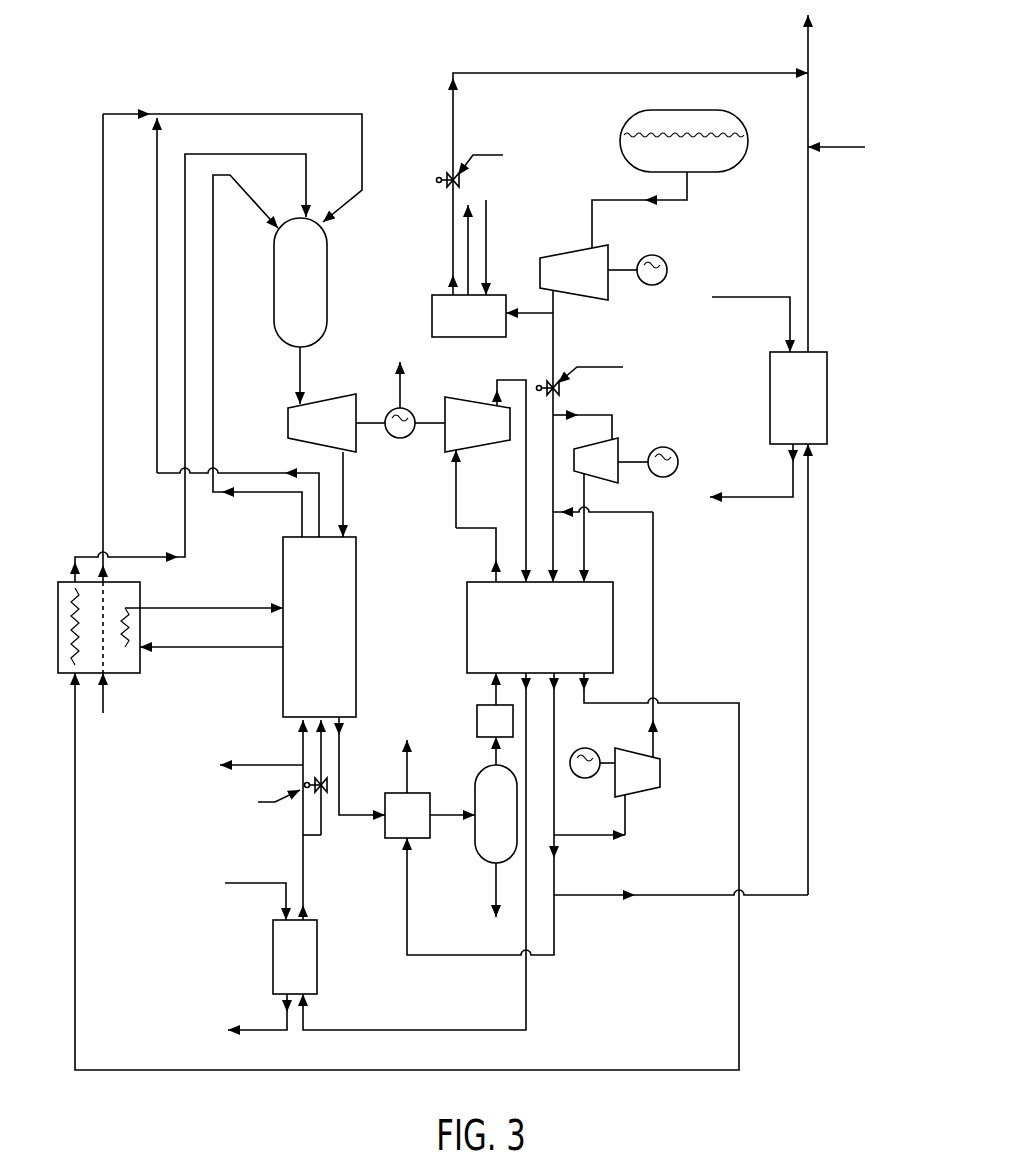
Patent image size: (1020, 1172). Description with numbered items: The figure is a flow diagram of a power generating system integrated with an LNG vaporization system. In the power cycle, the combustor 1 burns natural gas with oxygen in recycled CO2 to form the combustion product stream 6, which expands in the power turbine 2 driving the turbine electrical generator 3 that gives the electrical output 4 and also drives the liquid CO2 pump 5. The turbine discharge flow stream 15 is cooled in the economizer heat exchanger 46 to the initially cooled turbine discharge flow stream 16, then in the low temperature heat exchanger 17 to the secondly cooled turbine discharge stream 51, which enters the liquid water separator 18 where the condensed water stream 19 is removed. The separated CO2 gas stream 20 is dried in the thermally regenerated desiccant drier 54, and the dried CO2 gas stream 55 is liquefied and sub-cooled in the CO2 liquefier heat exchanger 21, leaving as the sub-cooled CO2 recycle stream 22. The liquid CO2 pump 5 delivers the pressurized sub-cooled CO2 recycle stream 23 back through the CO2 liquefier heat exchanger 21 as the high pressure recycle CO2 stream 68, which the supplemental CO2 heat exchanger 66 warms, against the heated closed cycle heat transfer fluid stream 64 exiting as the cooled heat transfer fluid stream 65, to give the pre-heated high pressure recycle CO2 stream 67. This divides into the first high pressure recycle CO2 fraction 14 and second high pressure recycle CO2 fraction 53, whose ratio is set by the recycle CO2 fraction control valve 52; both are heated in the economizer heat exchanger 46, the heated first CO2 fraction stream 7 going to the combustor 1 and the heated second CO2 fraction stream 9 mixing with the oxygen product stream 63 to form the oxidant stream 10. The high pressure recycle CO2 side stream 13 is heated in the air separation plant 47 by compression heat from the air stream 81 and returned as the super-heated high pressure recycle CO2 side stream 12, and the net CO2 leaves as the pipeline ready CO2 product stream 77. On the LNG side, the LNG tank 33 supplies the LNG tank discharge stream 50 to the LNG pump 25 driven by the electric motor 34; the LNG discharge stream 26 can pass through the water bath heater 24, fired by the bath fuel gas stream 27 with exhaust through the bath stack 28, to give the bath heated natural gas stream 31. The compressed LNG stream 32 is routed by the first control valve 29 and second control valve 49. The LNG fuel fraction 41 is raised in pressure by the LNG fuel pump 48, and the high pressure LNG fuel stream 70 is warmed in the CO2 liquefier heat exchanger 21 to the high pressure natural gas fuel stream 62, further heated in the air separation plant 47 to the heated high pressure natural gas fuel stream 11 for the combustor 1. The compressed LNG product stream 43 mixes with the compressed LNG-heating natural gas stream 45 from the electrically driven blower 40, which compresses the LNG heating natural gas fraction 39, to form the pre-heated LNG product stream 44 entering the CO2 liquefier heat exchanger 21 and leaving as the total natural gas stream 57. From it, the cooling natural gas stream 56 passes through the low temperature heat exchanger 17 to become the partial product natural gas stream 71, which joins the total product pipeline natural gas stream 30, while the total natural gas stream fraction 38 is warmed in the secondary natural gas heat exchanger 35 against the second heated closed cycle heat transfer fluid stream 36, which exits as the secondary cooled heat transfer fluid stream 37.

The combustor 1 is at (296, 298).
The power turbine 2 is at (316, 435).
The turbine electrical generator 3 is at (392, 437).
The electrical output 4 is at (401, 400).
The liquid CO2 pump 5 is at (469, 436).
The combustion product stream 6 is at (302, 365).
The heated first CO2 fraction stream 7 is at (213, 355).
The heated second CO2 fraction stream 9 is at (245, 473).
The oxidant stream 10 is at (262, 113).
The heated high pressure natural gas fuel stream 11 is at (282, 152).
The super-heated high pressure recycle CO2 side stream 12 is at (207, 608).
The high pressure recycle CO2 side stream 13 is at (203, 648).
The first high pressure recycle CO2 fraction 14 is at (303, 835).
The turbine discharge flow stream 15 is at (343, 497).
The initially cooled turbine discharge flow stream 16 is at (339, 760).
The low temperature heat exchanger 17 is at (399, 828).
The liquid water separator 18 is at (486, 823).
The condensed water stream 19 is at (493, 887).
The separated CO2 gas stream 20 is at (493, 760).
The CO2 liquefier heat exchanger 21 is at (528, 640).
The sub-cooled CO2 recycle stream 22 is at (468, 528).
The pressurized sub-cooled CO2 recycle stream 23 is at (526, 472).
The water bath heater 24 is at (460, 330).
The LNG pump 25 is at (568, 285).
The LNG discharge stream 26 is at (523, 316).
The bath fuel gas stream 27 is at (486, 242).
The bath stack 28 is at (468, 222).
The first control valve 29 is at (488, 155).
The total product pipeline natural gas stream 30 is at (808, 45).
The bath heated natural gas stream 31 is at (453, 228).
The compressed LNG stream 32 is at (553, 325).
The LNG tank 33 is at (675, 168).
The electric motor 34 is at (645, 258).
The secondary natural gas heat exchanger 35 is at (789, 405).
The second heated closed cycle heat transfer fluid stream 36 is at (745, 297).
The secondary cooled heat transfer fluid stream 37 is at (735, 497).
The total natural gas stream fraction 38 is at (808, 647).
The LNG heating natural gas fraction 39 is at (582, 835).
The electrically driven blower 40 is at (626, 785).
The LNG fuel fraction 41 is at (612, 415).
The compressed LNG product stream 43 is at (553, 427).
The pre-heated LNG product stream 44 is at (553, 517).
The compressed LNG-heating natural gas stream 45 is at (655, 613).
The economizer heat exchanger 46 is at (310, 640).
The air separation plant 47 is at (140, 593).
The LNG fuel pump 48 is at (591, 474).
The second control valve 49 is at (600, 367).
The LNG tank discharge stream 50 is at (592, 200).
The secondly cooled turbine discharge stream 51 is at (448, 817).
The recycle CO2 fraction control valve 52 is at (268, 802).
The second high pressure recycle CO2 fraction 53 is at (321, 835).
The thermally regenerated desiccant drier 54 is at (486, 733).
The dried CO2 gas stream 55 is at (493, 693).
The cooling natural gas stream 56 is at (483, 955).
The total natural gas stream 57 is at (555, 742).
The high pressure natural gas fuel stream 62 is at (692, 703).
The oxygen product stream 63 is at (103, 348).
The heated closed cycle heat transfer fluid stream 64 is at (245, 883).
The cooled heat transfer fluid stream 65 is at (255, 1030).
The supplemental CO2 heat exchanger 66 is at (286, 970).
The pre-heated high pressure recycle CO2 stream 67 is at (303, 878).
The high pressure recycle CO2 stream 68 is at (375, 1030).
The high pressure LNG fuel stream 70 is at (583, 500).
The partial product natural gas stream 71 is at (850, 147).
The pipeline ready CO2 product stream 77 is at (278, 765).
The air stream 81 is at (105, 702).